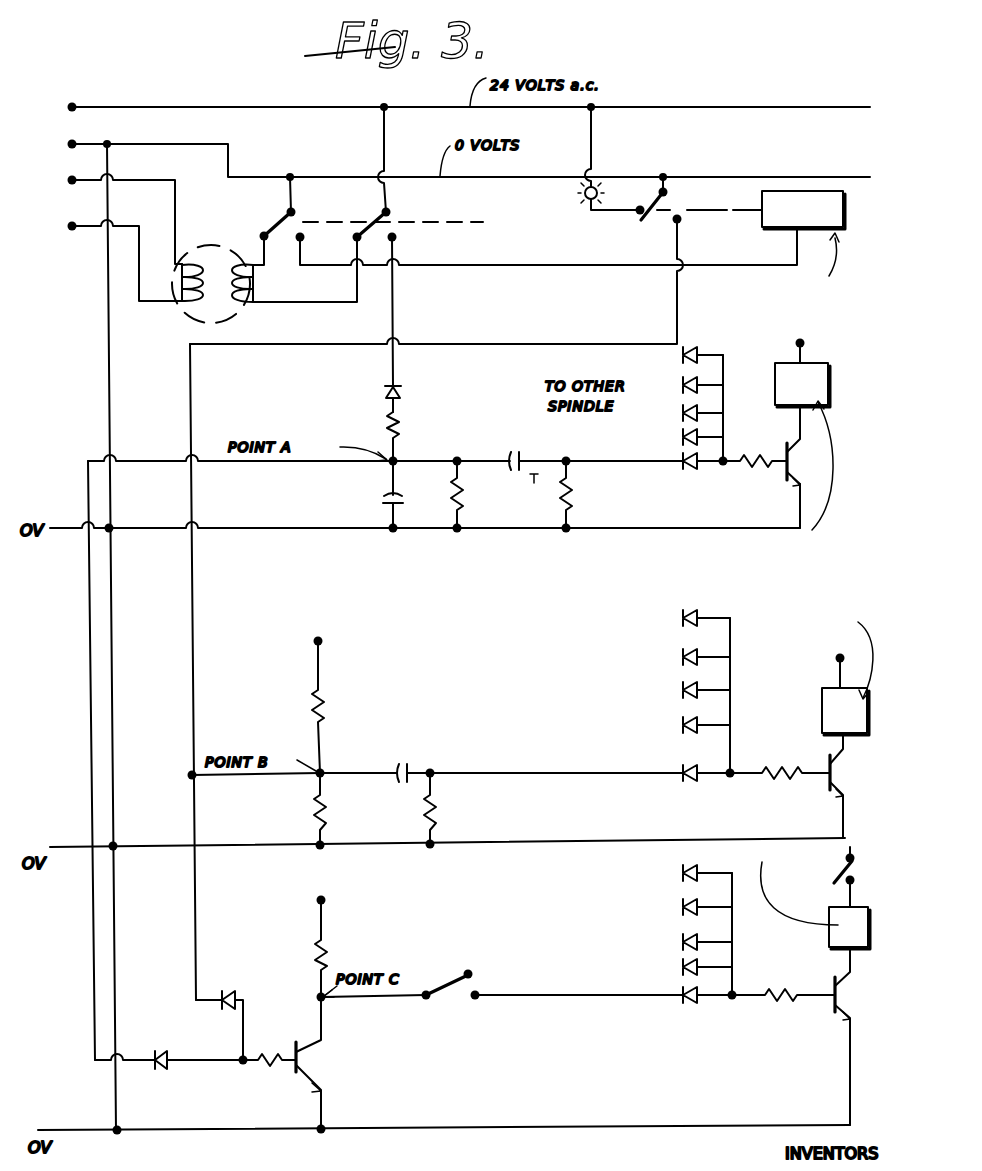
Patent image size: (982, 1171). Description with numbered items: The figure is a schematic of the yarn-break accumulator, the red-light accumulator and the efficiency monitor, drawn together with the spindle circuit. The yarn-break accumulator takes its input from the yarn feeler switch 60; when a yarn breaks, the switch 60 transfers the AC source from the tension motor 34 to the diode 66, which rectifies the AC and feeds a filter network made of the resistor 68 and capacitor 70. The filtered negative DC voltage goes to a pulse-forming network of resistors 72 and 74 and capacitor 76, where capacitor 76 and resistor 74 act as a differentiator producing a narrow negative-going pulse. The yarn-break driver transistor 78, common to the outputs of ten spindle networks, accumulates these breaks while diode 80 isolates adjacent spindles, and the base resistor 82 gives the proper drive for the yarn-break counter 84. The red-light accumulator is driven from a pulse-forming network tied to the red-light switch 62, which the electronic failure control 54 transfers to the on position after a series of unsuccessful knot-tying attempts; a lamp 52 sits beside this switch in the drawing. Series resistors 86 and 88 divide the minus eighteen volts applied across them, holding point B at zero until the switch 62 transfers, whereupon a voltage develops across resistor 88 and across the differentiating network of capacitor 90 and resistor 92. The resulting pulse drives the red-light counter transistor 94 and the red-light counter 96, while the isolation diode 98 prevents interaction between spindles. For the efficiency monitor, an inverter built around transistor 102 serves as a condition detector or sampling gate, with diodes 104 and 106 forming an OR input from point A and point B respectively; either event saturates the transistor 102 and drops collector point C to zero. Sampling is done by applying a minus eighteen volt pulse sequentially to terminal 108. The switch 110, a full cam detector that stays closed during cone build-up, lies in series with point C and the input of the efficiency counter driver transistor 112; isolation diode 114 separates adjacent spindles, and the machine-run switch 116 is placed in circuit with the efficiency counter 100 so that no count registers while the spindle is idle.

The tension motor 34 is at (183, 317).
The lamp 52 is at (590, 206).
The electronic failure control 54 is at (793, 190).
The yarn feeler switch 60 is at (288, 229).
The red-light switch 62 is at (595, 208).
The diode 66 is at (403, 390).
The resistor 68 is at (403, 426).
The capacitor 70 is at (380, 497).
The resistor 72 is at (459, 486).
The resistor 74 is at (576, 487).
The capacitor 76 is at (527, 456).
The yarn-break driver transistor 78 is at (788, 447).
The diode 80 is at (684, 455).
The base resistor 82 is at (750, 466).
The yarn-break counter 84 is at (789, 453).
The series resistor 86 is at (333, 708).
The series resistor 88 is at (331, 822).
The capacitor 90 is at (416, 765).
The resistor 92 is at (441, 818).
The red-light counter transistor 94 is at (828, 784).
The red-light counter 96 is at (836, 690).
The isolation diode 98 is at (692, 786).
The efficiency counter 100 is at (828, 950).
The transistor 102 is at (291, 1068).
The diode 104 is at (166, 1076).
The diode 106 is at (230, 996).
The terminal 108 is at (318, 902).
The switch 110 is at (466, 972).
The efficiency counter driver transistor 112 is at (832, 1008).
The isolation diode 114 is at (695, 1008).
The machine-run switch 116 is at (840, 868).